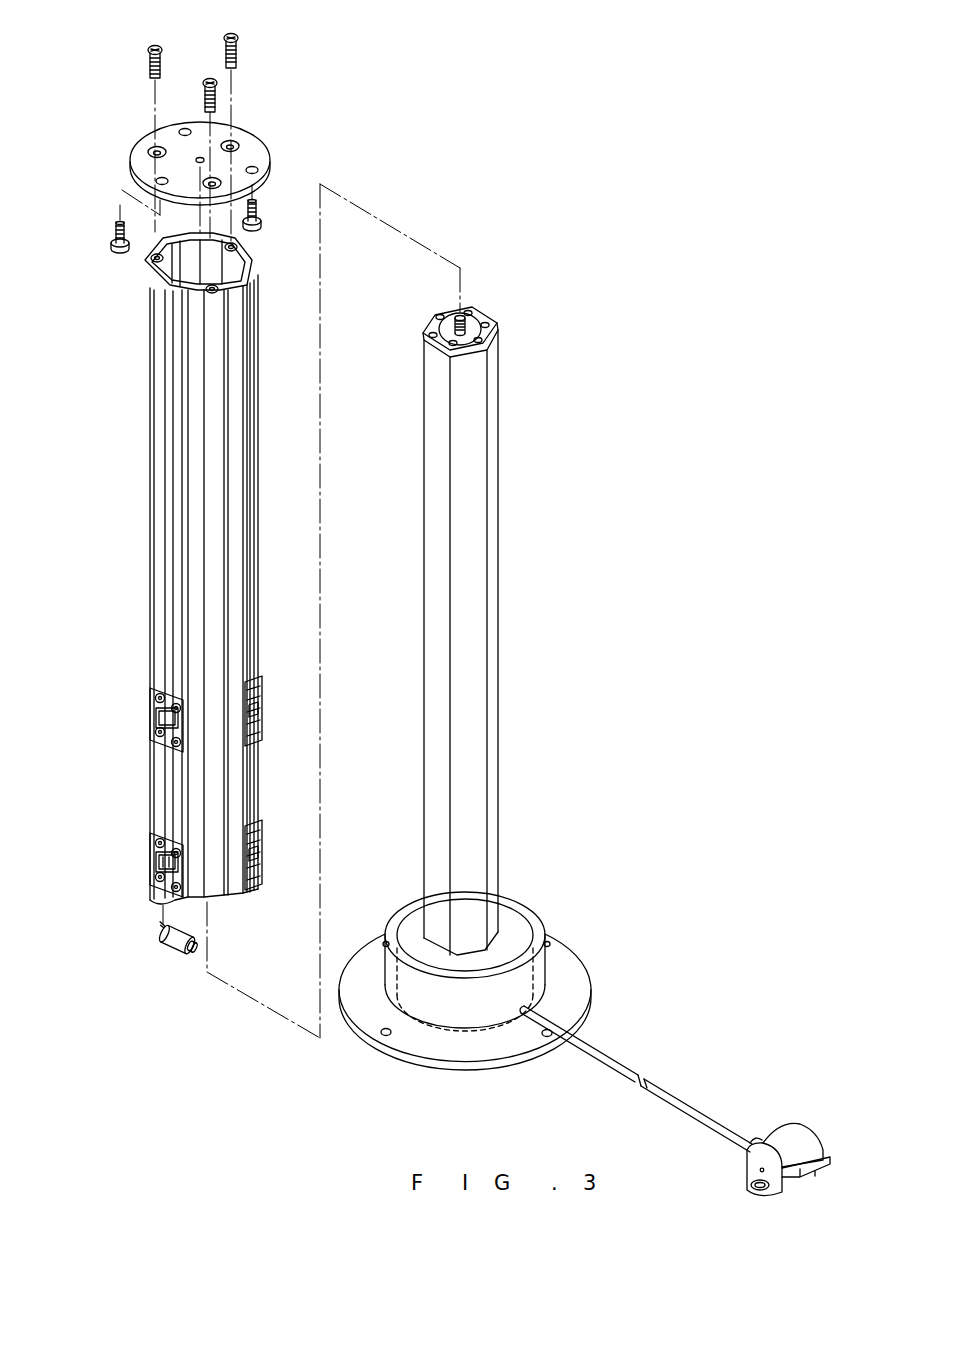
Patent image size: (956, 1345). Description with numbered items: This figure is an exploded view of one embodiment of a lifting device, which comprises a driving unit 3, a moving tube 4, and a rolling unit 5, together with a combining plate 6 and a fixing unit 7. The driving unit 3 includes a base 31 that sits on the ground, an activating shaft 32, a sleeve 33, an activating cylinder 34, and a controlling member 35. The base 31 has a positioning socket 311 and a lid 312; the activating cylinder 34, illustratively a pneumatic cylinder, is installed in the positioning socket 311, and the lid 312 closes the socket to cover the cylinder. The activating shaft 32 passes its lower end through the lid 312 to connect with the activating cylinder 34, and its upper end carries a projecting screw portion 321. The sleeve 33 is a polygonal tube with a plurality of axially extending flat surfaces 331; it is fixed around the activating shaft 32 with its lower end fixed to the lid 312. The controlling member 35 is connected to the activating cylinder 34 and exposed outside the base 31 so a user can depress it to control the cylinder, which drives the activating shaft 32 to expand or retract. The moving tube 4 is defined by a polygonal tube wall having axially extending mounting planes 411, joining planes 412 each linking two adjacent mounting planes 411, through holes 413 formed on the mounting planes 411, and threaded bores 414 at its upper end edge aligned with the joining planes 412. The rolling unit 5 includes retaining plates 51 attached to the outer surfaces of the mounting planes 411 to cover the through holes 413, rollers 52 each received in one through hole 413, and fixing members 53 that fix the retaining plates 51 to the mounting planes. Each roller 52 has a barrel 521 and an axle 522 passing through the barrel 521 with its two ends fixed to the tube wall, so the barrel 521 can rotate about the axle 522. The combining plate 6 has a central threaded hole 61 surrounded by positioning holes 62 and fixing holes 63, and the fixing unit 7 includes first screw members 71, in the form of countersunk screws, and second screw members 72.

The driving unit 3 is at (584, 997).
The base 31 is at (517, 958).
The positioning socket 311 is at (540, 922).
The lid 312 is at (510, 918).
The activating shaft 32 is at (509, 295).
The projecting screw portion 321 is at (468, 330).
The sleeve 33 is at (480, 594).
The flat surfaces 331 is at (432, 472).
The activating cylinder 34 is at (536, 970).
The controlling member 35 is at (795, 1125).
The moving tube 4 is at (198, 568).
The mounting planes 411 is at (160, 432).
The joining planes 412 is at (250, 262).
The through holes 413 is at (156, 714).
The threaded bores 414 is at (165, 287).
The rolling unit 5 is at (148, 845).
The retaining plates 51 is at (152, 718).
The rollers 52 is at (171, 968).
The barrel 521 is at (172, 940).
The axle 522 is at (188, 950).
The fixing members 53 is at (155, 697).
The combining plate 6 is at (204, 115).
The central threaded hole 61 is at (199, 157).
The positioning holes 62 is at (184, 128).
The fixing holes 63 is at (150, 150).
The fixing unit 7 is at (196, 142).
The first screw members 71 is at (150, 62).
The second screw members 72 is at (112, 226).